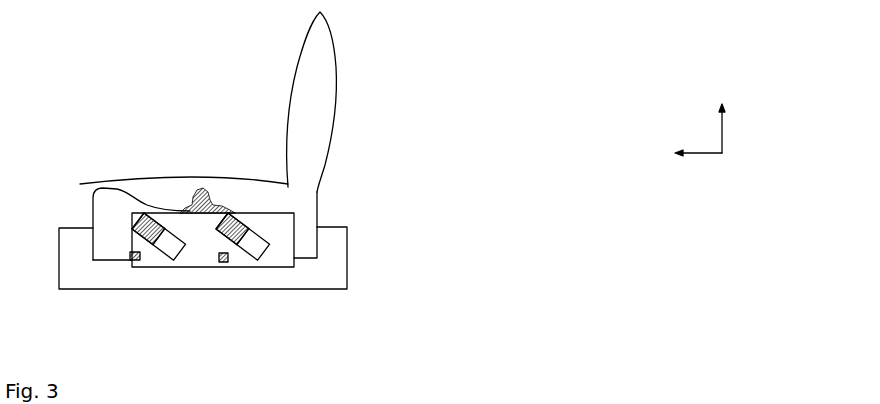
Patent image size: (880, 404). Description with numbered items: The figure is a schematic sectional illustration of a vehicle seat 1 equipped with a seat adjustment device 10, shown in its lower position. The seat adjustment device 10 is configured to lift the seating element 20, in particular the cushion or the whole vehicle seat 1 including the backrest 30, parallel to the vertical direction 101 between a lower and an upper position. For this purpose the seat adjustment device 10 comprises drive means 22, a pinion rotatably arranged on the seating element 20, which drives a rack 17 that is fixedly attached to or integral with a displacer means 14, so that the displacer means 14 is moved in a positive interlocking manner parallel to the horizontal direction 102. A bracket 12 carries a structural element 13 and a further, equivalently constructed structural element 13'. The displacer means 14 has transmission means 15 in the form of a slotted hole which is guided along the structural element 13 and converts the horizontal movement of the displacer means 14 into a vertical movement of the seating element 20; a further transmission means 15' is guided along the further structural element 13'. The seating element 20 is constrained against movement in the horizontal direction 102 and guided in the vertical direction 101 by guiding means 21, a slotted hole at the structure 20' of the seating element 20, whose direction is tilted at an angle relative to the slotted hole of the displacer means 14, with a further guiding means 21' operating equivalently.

The vehicle seat 1 is at (192, 49).
The seat adjustment device 10 is at (399, 259).
The bracket 12 is at (347, 260).
The structural element 13 is at (145, 267).
The further structural element 13' is at (252, 267).
The displacer means 14 is at (291, 247).
The transmission means 15 is at (170, 267).
The further transmission means 15' is at (276, 272).
The rack 17 is at (100, 185).
The seating element 20 is at (222, 187).
The structure of the seating element 20' is at (340, 217).
The guiding means 21 is at (96, 286).
The further guiding means 21' is at (235, 288).
The drive means 22 is at (190, 200).
The backrest 30 is at (357, 70).
The vertical direction 101 is at (723, 133).
The horizontal direction 102 is at (693, 156).